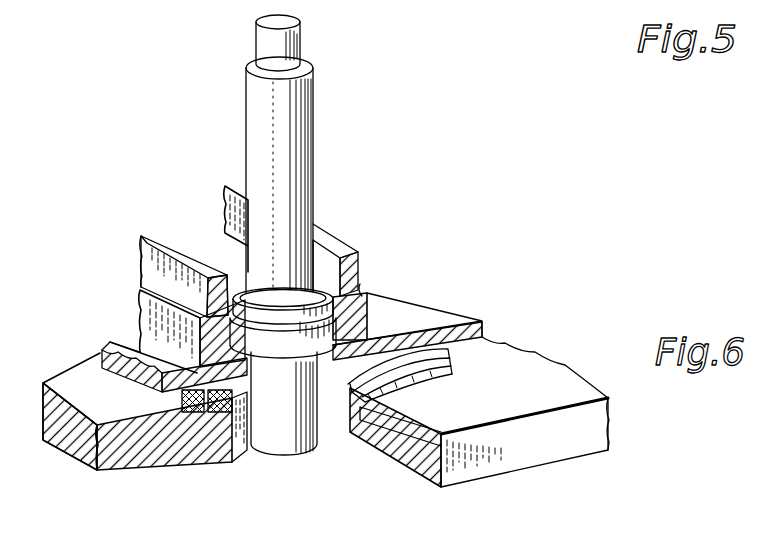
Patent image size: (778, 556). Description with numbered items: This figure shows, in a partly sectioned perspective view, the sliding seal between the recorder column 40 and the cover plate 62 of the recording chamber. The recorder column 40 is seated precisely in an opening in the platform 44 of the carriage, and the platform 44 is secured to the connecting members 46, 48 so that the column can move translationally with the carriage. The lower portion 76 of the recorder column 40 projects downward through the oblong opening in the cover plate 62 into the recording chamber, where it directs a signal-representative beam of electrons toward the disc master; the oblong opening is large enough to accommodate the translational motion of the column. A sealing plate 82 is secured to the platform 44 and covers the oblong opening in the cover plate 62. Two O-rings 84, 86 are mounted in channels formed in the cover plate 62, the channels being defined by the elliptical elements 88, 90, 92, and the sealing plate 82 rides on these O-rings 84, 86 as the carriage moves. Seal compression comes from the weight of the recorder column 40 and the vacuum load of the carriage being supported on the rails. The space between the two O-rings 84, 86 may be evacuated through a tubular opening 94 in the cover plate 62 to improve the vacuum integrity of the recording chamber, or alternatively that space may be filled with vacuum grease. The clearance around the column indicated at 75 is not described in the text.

The recorder column 40 is at (314, 134).
The platform 44 is at (368, 310).
The connecting member 46 is at (143, 257).
The connecting member 48 is at (337, 248).
The cover plate 62 is at (602, 447).
The bore opening 75 is at (338, 418).
The lower portion of the recorder column 76 is at (291, 452).
The sealing plate 82 is at (441, 310).
The O-ring 84 is at (195, 414).
The O-ring 86 is at (229, 414).
The elliptical element 88 is at (498, 344).
The elliptical element 90 is at (448, 370).
The elliptical element 92 is at (408, 374).
The tubular opening 94 is at (443, 446).